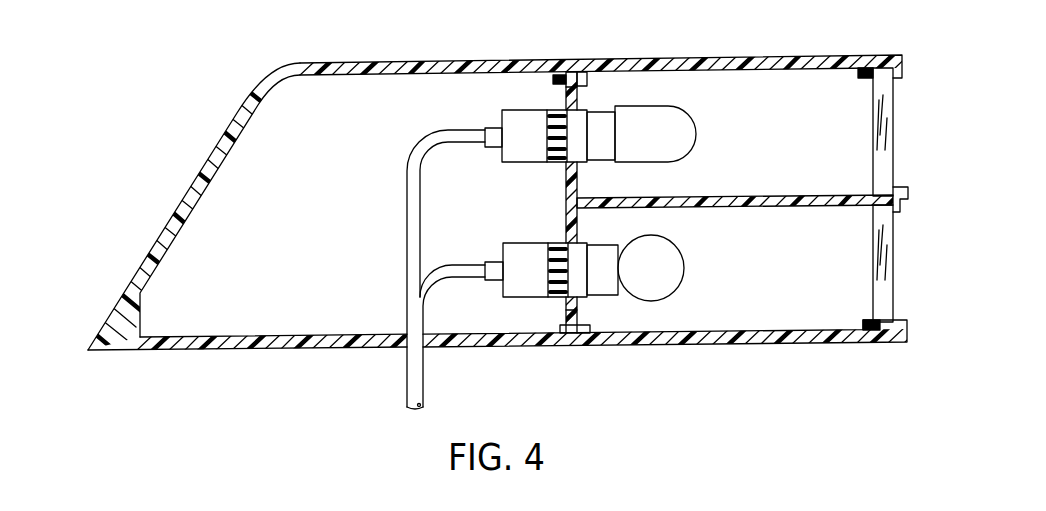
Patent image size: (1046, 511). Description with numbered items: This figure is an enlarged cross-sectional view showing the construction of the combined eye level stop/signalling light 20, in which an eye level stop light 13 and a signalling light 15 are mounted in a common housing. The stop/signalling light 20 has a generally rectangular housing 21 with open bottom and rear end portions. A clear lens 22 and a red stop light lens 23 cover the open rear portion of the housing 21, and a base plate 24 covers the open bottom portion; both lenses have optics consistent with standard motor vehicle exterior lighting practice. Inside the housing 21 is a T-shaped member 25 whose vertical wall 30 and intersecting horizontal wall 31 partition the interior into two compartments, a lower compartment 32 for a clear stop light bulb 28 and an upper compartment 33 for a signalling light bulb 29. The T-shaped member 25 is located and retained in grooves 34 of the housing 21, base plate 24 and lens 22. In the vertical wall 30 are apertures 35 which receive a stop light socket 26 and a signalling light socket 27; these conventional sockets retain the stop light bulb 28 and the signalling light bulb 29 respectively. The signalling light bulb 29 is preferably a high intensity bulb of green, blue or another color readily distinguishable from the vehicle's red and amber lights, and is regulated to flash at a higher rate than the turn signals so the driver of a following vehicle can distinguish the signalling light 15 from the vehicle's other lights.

The eye level stop light 13 is at (504, 207).
The signalling light 15 is at (681, 82).
The combined eye level stop/signalling light 20 is at (765, 57).
The housing 21 is at (435, 62).
The clear lens 22 is at (894, 122).
The red stop light lens 23 is at (874, 268).
The base plate 24 is at (686, 349).
The T-shaped member 25 is at (725, 197).
The stop light socket 26 is at (534, 243).
The signalling light socket 27 is at (532, 163).
The clear stop light bulb 28 is at (684, 281).
The signalling light bulb 29 is at (697, 124).
The vertical wall 30 is at (566, 302).
The horizontal wall 31 is at (688, 210).
The lower compartment 32 is at (669, 323).
The upper compartment 33 is at (607, 82).
The grooves 34 is at (570, 70).
The apertures 35 is at (568, 104).